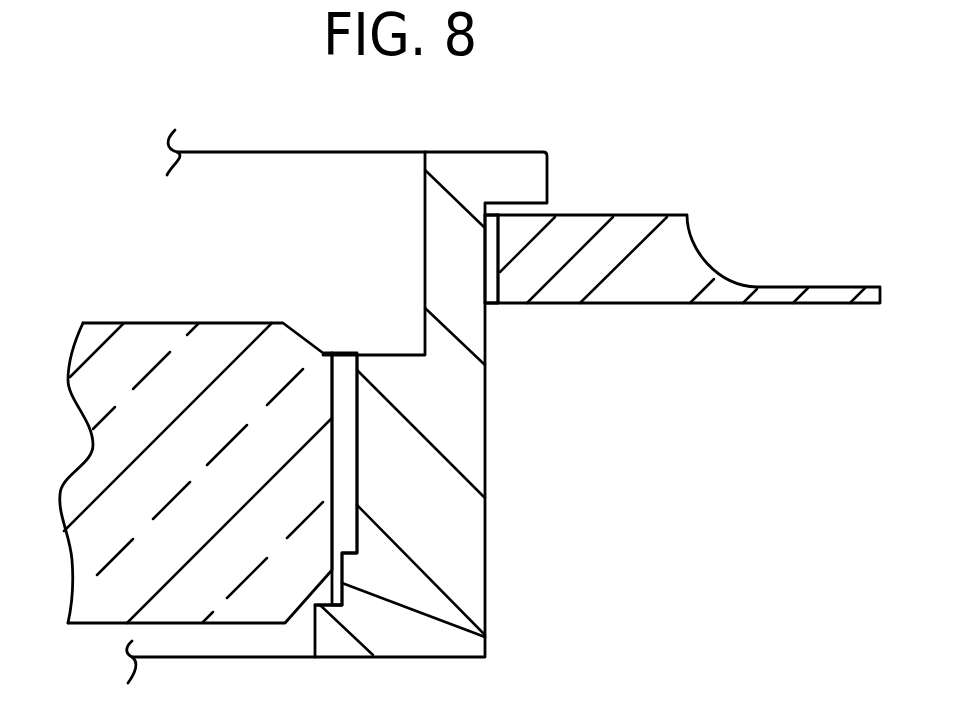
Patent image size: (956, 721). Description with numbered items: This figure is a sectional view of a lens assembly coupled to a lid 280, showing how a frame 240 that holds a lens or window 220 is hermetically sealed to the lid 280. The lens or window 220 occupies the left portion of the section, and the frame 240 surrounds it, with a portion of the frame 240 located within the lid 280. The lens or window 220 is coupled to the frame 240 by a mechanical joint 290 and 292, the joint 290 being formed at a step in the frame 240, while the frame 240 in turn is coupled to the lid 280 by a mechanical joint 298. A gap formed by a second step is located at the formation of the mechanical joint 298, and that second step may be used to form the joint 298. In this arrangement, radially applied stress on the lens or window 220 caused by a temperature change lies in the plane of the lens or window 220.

The lens or window 220 is at (126, 323).
The frame 240 is at (548, 171).
The lid 280 is at (633, 303).
The mechanical joint 290 is at (485, 637).
The mechanical joint 292 is at (357, 480).
The mechanical joint 298 is at (491, 304).